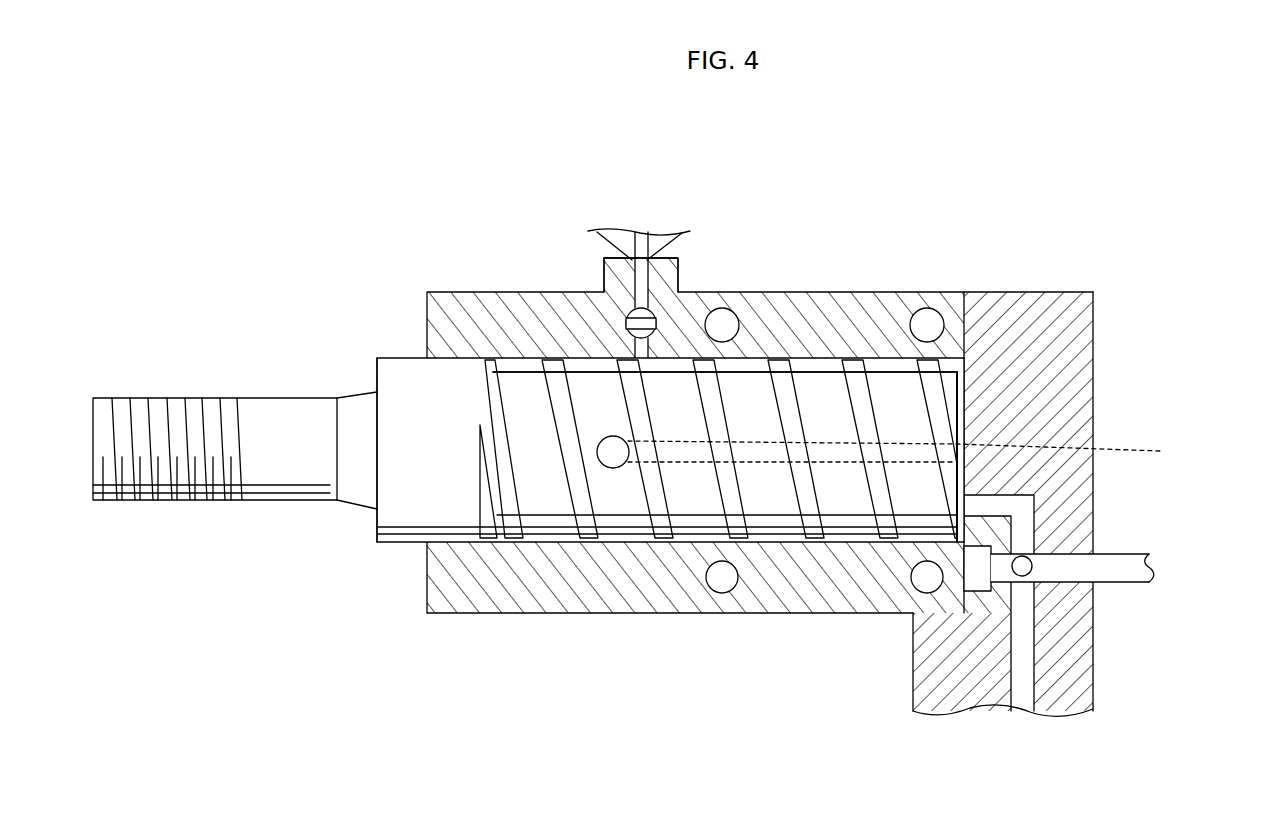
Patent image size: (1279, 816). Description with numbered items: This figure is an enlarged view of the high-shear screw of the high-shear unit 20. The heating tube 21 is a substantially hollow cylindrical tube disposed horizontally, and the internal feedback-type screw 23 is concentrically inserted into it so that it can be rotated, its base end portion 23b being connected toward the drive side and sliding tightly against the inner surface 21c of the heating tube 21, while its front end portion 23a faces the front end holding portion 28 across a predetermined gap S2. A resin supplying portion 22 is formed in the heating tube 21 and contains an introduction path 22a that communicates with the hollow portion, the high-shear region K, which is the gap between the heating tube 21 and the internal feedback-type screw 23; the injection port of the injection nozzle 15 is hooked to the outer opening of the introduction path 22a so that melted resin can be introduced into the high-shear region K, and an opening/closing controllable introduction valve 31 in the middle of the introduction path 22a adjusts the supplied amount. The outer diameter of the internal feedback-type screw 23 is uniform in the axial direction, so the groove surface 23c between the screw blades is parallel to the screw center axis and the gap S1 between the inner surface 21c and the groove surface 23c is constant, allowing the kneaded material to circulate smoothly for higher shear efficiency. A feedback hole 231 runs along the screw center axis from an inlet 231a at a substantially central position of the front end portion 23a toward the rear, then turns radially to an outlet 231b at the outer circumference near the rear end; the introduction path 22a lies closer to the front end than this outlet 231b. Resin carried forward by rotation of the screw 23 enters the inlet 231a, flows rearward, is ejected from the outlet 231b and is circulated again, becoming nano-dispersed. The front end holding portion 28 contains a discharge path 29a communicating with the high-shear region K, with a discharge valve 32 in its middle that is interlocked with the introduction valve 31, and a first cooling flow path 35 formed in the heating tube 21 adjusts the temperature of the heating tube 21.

The injection nozzle 15 is at (677, 242).
The high-shear unit 20 is at (1078, 275).
The heating tube 21 is at (867, 292).
The inner surface 21c is at (885, 368).
The resin supplying portion 22 is at (604, 267).
The introduction path 22a is at (645, 282).
The internal feedback-type screw 23 is at (842, 538).
The front end portion 23a is at (957, 385).
The base end portion 23b is at (488, 370).
The groove surface 23c is at (821, 348).
The front end holding portion 28 is at (1093, 403).
The discharge path 29a is at (1020, 511).
The introduction valve 31 is at (628, 318).
The discharge valve 32 is at (1128, 549).
The first cooling flow path 35 is at (717, 594).
The feedback hole 231 is at (767, 462).
The inlet 231a is at (922, 451).
The outlet 231b is at (613, 468).
The high-shear region K is at (688, 548).
The gap S1 is at (802, 373).
The gap S2 is at (961, 546).